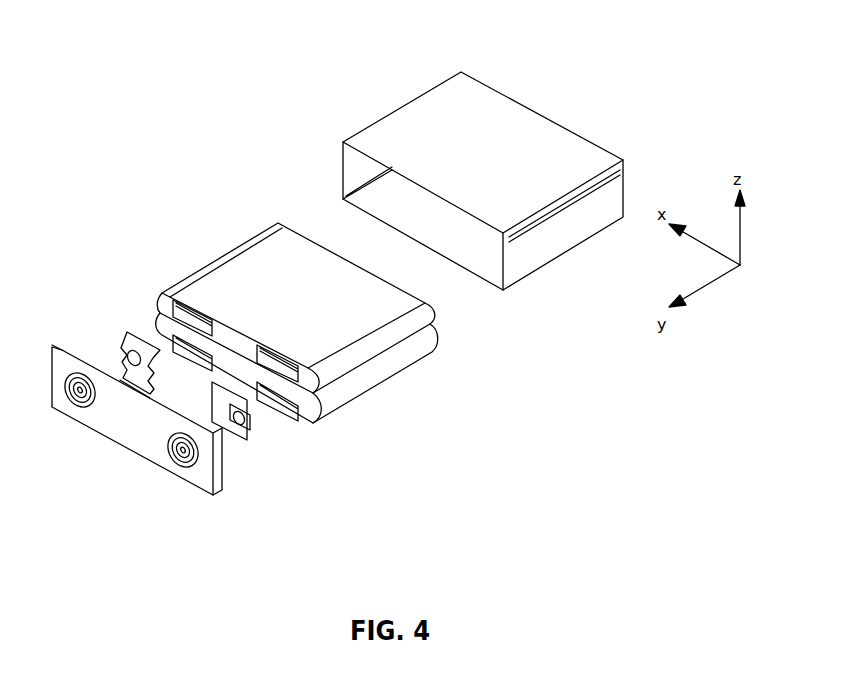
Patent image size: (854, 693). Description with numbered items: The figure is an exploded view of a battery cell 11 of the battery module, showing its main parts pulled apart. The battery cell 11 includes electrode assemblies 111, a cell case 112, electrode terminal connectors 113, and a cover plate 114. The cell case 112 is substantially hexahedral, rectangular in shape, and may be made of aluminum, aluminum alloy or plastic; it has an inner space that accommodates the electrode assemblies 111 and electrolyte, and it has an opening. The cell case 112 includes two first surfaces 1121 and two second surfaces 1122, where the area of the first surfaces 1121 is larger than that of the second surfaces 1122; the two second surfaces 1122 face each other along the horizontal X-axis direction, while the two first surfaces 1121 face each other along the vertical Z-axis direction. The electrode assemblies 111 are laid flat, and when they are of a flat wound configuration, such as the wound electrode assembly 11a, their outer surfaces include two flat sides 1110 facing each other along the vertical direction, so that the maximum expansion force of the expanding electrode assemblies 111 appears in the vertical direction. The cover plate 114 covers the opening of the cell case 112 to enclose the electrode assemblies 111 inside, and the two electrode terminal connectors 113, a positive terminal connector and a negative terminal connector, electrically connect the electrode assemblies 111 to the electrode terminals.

The battery cell 11 is at (490, 456).
The electrode assemblies 111 is at (292, 465).
The flat sides 1110 is at (243, 285).
The wound electrode assembly 11a is at (172, 293).
The cell case 112 is at (316, 141).
The first surfaces 1121 is at (413, 127).
The second surfaces 1122 is at (540, 250).
The electrode terminal connectors 113 is at (123, 333).
The cover plate 114 is at (120, 441).